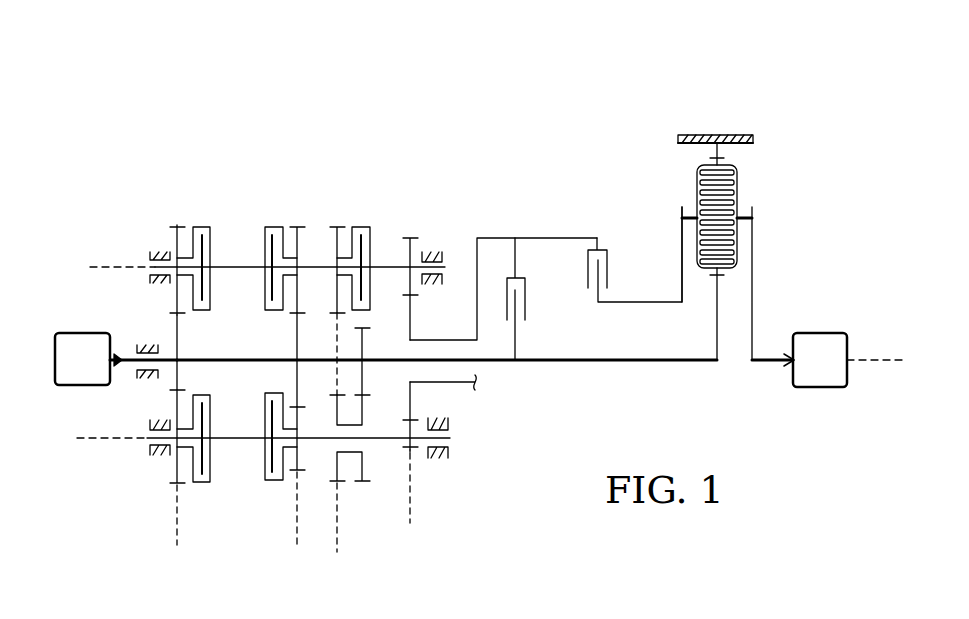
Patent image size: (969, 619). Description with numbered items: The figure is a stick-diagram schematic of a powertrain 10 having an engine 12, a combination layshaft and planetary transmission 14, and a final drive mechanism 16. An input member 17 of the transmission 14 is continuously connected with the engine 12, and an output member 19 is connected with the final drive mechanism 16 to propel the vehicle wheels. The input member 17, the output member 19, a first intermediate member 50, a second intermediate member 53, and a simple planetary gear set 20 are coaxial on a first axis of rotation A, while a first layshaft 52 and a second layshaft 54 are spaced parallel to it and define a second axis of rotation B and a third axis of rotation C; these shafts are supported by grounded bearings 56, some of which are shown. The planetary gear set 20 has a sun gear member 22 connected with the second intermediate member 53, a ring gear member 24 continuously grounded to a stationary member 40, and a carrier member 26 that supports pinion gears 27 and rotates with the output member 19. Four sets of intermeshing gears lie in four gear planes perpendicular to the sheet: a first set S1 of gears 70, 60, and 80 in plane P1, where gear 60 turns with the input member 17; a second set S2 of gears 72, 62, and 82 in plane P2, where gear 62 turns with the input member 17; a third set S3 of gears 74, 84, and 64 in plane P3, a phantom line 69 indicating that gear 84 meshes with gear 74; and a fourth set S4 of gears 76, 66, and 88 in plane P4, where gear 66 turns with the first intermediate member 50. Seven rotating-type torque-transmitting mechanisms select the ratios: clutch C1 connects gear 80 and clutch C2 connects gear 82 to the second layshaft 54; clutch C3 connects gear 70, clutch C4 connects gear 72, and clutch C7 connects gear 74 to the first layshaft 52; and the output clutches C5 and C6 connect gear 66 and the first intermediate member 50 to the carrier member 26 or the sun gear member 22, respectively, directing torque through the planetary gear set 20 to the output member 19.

The powertrain 10 is at (558, 63).
The combination layshaft and planetary transmission 14 is at (458, 85).
The engine 12 is at (66, 333).
The final drive mechanism 16 is at (820, 333).
The input member 17 is at (120, 355).
The output member 19 is at (766, 362).
The planetary gear set 20 is at (742, 175).
The sun gear member 22 is at (713, 285).
The ring gear member 24 is at (723, 155).
The carrier member 26 is at (743, 210).
The pinion gears 27 is at (697, 197).
The stationary member 40 is at (718, 133).
The first intermediate member 50 is at (446, 335).
The first layshaft 52 is at (333, 265).
The second intermediate member 53 is at (619, 361).
The second layshaft 54 is at (410, 440).
The grounded bearings 56 is at (158, 252).
The gear 60 is at (178, 378).
The gear 62 is at (300, 340).
The gear 64 is at (363, 350).
The gear 66 is at (413, 335).
The dashed line 69 is at (337, 345).
The gear 70 is at (179, 240).
The gear 72 is at (297, 236).
The gear 74 is at (347, 238).
The gear 76 is at (412, 246).
The gear 80 is at (165, 470).
The gear 82 is at (300, 458).
The gear 84 is at (343, 468).
The gear 88 is at (413, 450).
The first set of intermeshing gears S1 is at (178, 222).
The second set of intermeshing gears S2 is at (294, 222).
The third set of intermeshing gears S3 is at (338, 220).
The fourth set of intermeshing gears S4 is at (411, 225).
The first torque-transmitting mechanism C1 is at (218, 452).
The second torque-transmitting mechanism C2 is at (258, 450).
The third torque-transmitting mechanism C3 is at (220, 262).
The fourth torque-transmitting mechanism C4 is at (255, 282).
The fifth torque-transmitting mechanism C5 is at (617, 295).
The sixth torque-transmitting mechanism C6 is at (522, 326).
The seventh torque-transmitting mechanism C7 is at (378, 260).
The first gear plane P1 is at (177, 545).
The second gear plane P2 is at (297, 542).
The third gear plane P3 is at (337, 552).
The fourth gear plane P4 is at (413, 500).
The first axis of rotation A is at (880, 362).
The second axis of rotation B is at (90, 267).
The third axis of rotation C is at (82, 440).